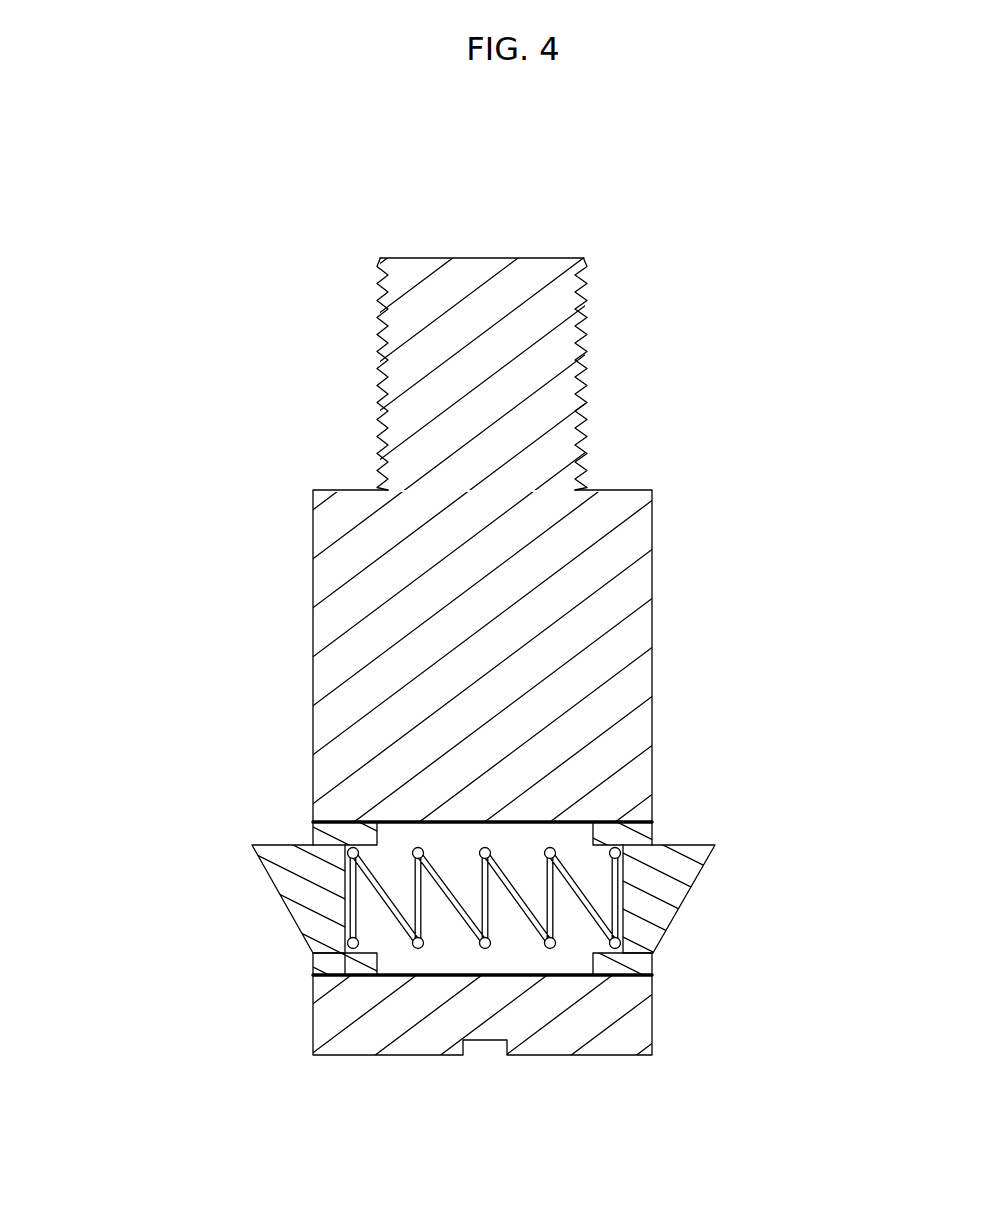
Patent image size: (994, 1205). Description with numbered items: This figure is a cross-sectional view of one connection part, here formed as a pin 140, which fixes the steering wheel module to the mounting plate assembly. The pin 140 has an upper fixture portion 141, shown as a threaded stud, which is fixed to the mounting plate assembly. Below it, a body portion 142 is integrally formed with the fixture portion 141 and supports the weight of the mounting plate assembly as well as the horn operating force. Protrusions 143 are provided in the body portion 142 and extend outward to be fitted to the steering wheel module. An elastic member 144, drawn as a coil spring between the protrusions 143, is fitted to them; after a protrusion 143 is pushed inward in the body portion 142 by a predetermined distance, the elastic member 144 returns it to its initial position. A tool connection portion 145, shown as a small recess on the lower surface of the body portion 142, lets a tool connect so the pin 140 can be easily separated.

The pin 140 is at (222, 326).
The fixture portion 141 is at (533, 362).
The body portion 142 is at (653, 575).
The protrusions 143 is at (683, 843).
The elastic member 144 is at (618, 896).
The tool connection portion 145 is at (487, 1056).